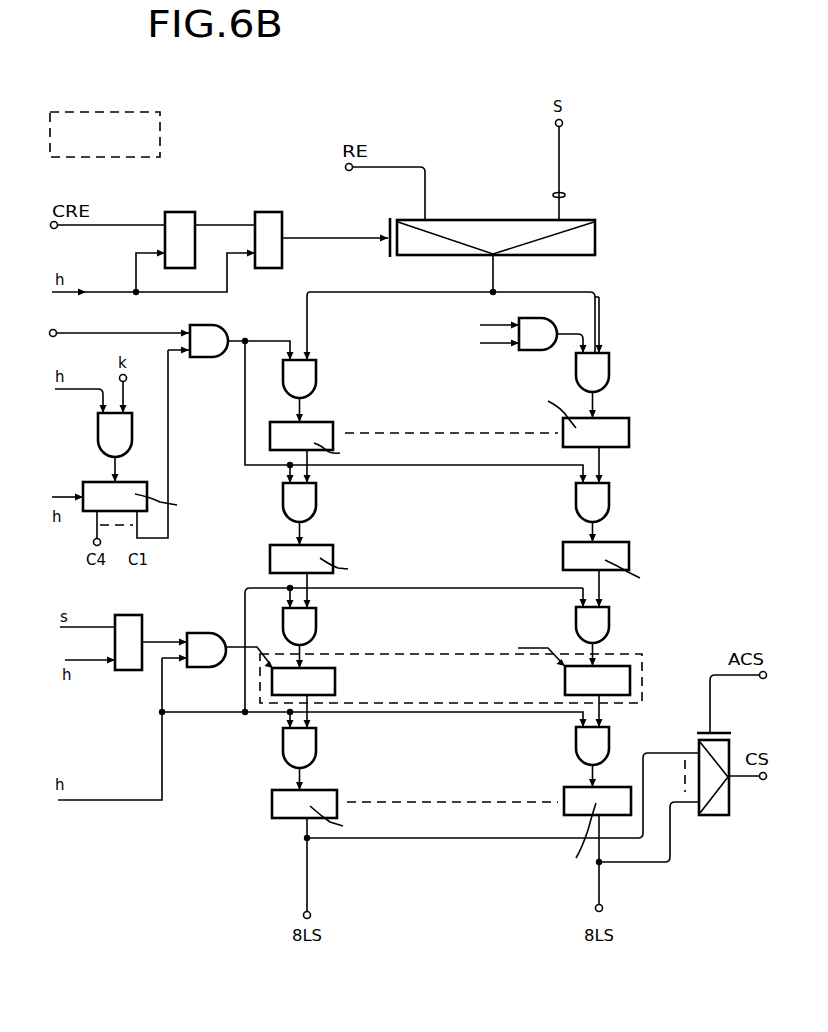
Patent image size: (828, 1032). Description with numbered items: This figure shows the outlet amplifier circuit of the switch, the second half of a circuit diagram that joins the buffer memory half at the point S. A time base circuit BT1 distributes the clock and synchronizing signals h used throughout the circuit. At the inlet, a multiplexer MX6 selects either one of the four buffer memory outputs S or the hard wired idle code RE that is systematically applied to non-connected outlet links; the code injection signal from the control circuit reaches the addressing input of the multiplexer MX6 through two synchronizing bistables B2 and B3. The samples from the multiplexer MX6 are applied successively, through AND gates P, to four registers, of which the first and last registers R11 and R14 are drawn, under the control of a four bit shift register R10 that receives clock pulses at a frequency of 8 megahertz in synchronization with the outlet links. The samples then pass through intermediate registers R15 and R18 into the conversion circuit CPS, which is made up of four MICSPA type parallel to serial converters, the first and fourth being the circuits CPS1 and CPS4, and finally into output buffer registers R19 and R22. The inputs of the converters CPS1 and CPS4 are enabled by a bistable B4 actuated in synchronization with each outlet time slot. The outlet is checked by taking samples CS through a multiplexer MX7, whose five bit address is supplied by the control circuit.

The time base circuit BT1 is at (145, 132).
The synchronizing bistable B2 is at (180, 222).
The synchronizing bistable B3 is at (268, 222).
The bistable B4 is at (128, 627).
The multiplexer MX6 is at (596, 240).
The multiplexer MX7 is at (718, 816).
The eight megahertz clock frequency 8 is at (565, 195).
The AND gate P is at (212, 335).
The four bit shift register R10 is at (105, 497).
The register R11 is at (318, 432).
The register R14 is at (614, 430).
The intermediate register R15 is at (320, 552).
The intermediate register R18 is at (614, 552).
The output buffer register R19 is at (320, 800).
The output buffer register R22 is at (574, 792).
The conversion circuit CPS is at (478, 678).
The parallel to serial conversion circuit CPS1 is at (322, 685).
The parallel to serial conversion circuit CPS4 is at (565, 681).